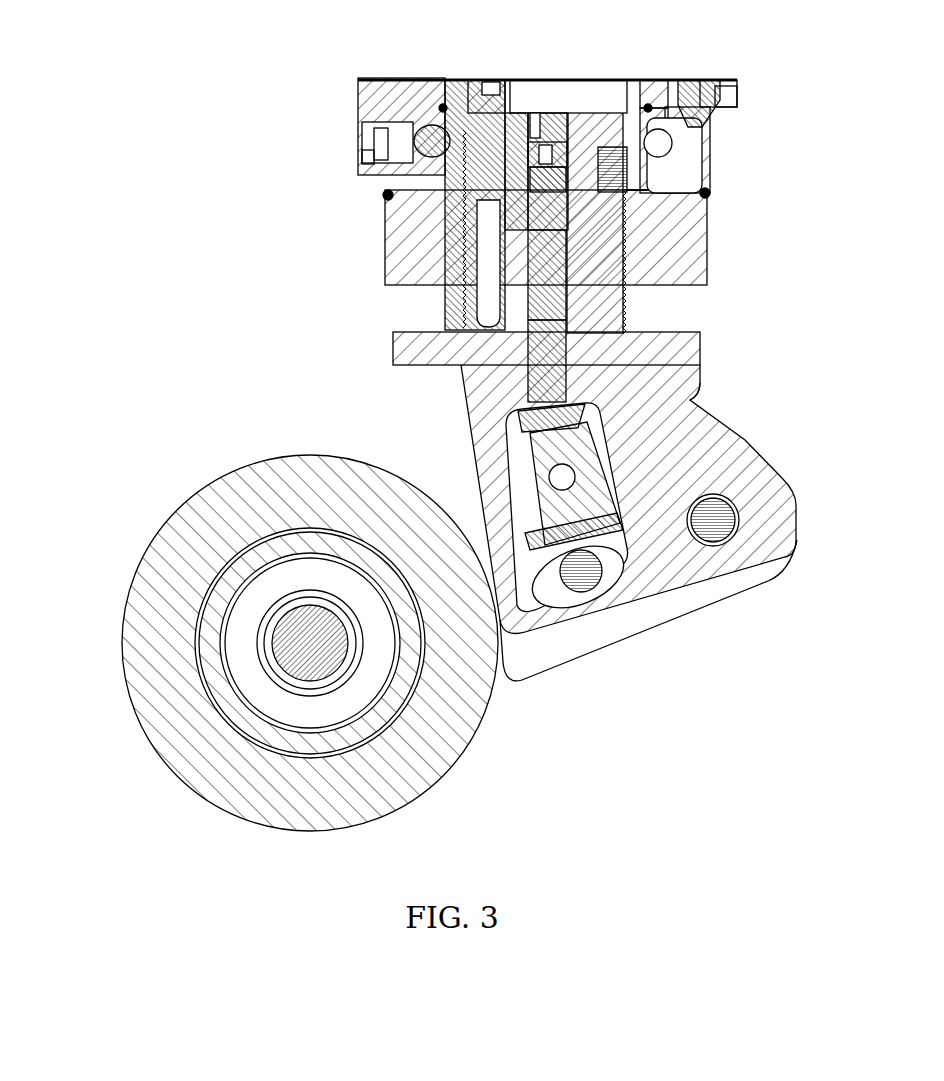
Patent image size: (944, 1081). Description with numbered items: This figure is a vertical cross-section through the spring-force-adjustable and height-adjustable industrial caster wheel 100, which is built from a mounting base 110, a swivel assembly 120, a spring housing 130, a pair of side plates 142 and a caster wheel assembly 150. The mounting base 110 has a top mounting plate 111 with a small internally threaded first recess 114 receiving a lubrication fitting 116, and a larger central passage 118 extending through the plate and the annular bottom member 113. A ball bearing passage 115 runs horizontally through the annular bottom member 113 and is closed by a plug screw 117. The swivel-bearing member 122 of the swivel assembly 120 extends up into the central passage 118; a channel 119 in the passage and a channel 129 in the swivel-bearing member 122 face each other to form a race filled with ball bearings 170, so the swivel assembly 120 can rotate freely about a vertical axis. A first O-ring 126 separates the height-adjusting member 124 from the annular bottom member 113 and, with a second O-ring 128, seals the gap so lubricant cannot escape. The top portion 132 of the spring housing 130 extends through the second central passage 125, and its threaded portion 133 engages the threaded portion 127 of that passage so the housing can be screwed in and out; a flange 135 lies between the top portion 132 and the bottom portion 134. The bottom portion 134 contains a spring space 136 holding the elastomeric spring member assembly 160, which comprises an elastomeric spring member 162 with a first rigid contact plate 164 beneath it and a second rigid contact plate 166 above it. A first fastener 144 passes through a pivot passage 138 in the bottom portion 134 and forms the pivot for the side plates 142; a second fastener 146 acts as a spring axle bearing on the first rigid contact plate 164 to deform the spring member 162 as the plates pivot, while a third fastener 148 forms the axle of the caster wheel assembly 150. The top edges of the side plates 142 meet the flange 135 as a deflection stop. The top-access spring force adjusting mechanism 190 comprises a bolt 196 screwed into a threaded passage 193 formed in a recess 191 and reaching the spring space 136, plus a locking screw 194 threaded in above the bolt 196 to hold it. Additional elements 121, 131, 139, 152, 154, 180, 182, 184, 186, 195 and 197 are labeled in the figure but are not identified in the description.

The spring-force-adjustable and height-adjustable industrial caster wheel 100 is at (178, 254).
The mounting base 110 is at (280, 142).
The top mounting plate 111 is at (372, 112).
The annular bottom member 113 is at (688, 177).
The first recess 114 is at (713, 82).
The ball bearing passage 115 is at (368, 158).
The lubrication fitting 116 is at (692, 93).
The plug screw 117 is at (397, 147).
The central passage 118 is at (653, 82).
The channel 119 is at (675, 133).
The swivel assembly 120 is at (325, 238).
The seal 121 is at (443, 108).
The swivel-bearing member 122 is at (620, 107).
The height-adjusting member 124 is at (543, 177).
The second central passage 125 is at (522, 96).
The first O-ring 126 is at (705, 193).
The threaded portion of the second central passage 127 is at (627, 192).
The second O-ring 128 is at (648, 108).
The channel 129 is at (450, 148).
The spring-force-adjustable and height-adjustable spring housing 130 is at (380, 347).
The bolt shoulder 131 is at (507, 150).
The top portion 132 is at (590, 137).
The threaded portion 133 is at (625, 303).
The bottom portion 134 is at (628, 373).
The flange 135 is at (680, 340).
The spring space 136 is at (548, 577).
The pivot passage 138 is at (735, 532).
The wall 139 is at (528, 362).
The side plates 142 is at (515, 643).
The first fastener 144 is at (720, 515).
The second fastener 146 is at (582, 567).
The third fastener 148 is at (287, 633).
The caster wheel assembly 150 is at (143, 495).
The wheel hub 152 is at (318, 512).
The bearing 154 is at (263, 688).
The elastomeric spring member assembly 160 is at (615, 442).
The elastomeric spring member 162 is at (530, 468).
The first rigid contact plate 164 is at (597, 530).
The second rigid contact plate 166 is at (543, 420).
The ball bearings 170 is at (658, 145).
The bolt 180 is at (476, 82).
The bolt body 182 is at (482, 245).
The bolt threads 184 is at (462, 100).
The bolt head 186 is at (470, 92).
The top-access spring force adjusting mechanism 190 is at (548, 110).
The recess 191 is at (534, 134).
The threaded passage 193 is at (528, 257).
The locking screw 194 is at (543, 188).
The shaft head 195 is at (548, 150).
The bolt 196 is at (547, 283).
The threaded block 197 is at (535, 197).